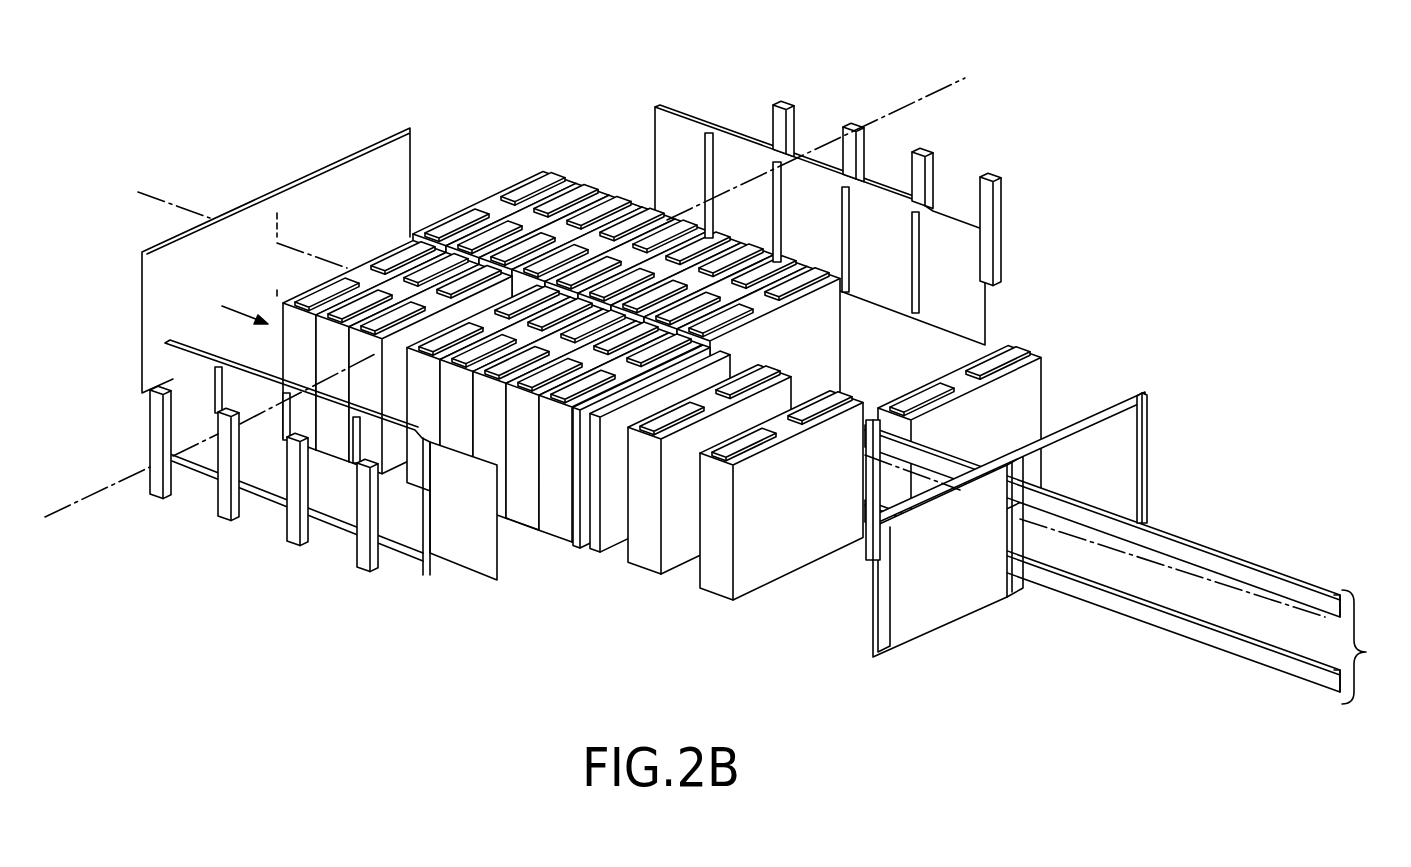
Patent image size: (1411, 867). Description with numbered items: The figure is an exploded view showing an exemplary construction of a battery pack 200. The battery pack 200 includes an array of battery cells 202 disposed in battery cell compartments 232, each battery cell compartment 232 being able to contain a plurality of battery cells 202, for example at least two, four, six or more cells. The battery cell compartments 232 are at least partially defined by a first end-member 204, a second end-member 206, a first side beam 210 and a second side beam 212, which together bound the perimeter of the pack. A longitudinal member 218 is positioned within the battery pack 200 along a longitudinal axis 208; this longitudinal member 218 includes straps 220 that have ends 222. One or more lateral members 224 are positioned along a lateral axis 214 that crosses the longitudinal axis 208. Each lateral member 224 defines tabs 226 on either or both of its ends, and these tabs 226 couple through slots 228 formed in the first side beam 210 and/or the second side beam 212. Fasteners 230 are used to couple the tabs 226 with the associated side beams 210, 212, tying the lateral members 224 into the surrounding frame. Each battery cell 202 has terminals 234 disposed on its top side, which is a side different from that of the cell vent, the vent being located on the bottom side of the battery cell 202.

The battery pack 200 is at (726, 381).
The battery cell 202 is at (696, 371).
The first end-member 204 is at (343, 157).
The second end-member 206 is at (922, 647).
The longitudinal axis 208 is at (170, 202).
The first side beam 210 is at (448, 566).
The second side beam 212 is at (676, 104).
The lateral axis 214 is at (102, 492).
The longitudinal member 218 is at (1136, 548).
The strap 220 is at (1210, 548).
The end 222 is at (1345, 592).
The lateral member 224 is at (600, 552).
The tab 226 is at (568, 548).
The slot 228 is at (712, 133).
The fastener 230 is at (786, 104).
The battery cell compartment 232 is at (527, 580).
The terminal 234 is at (518, 183).